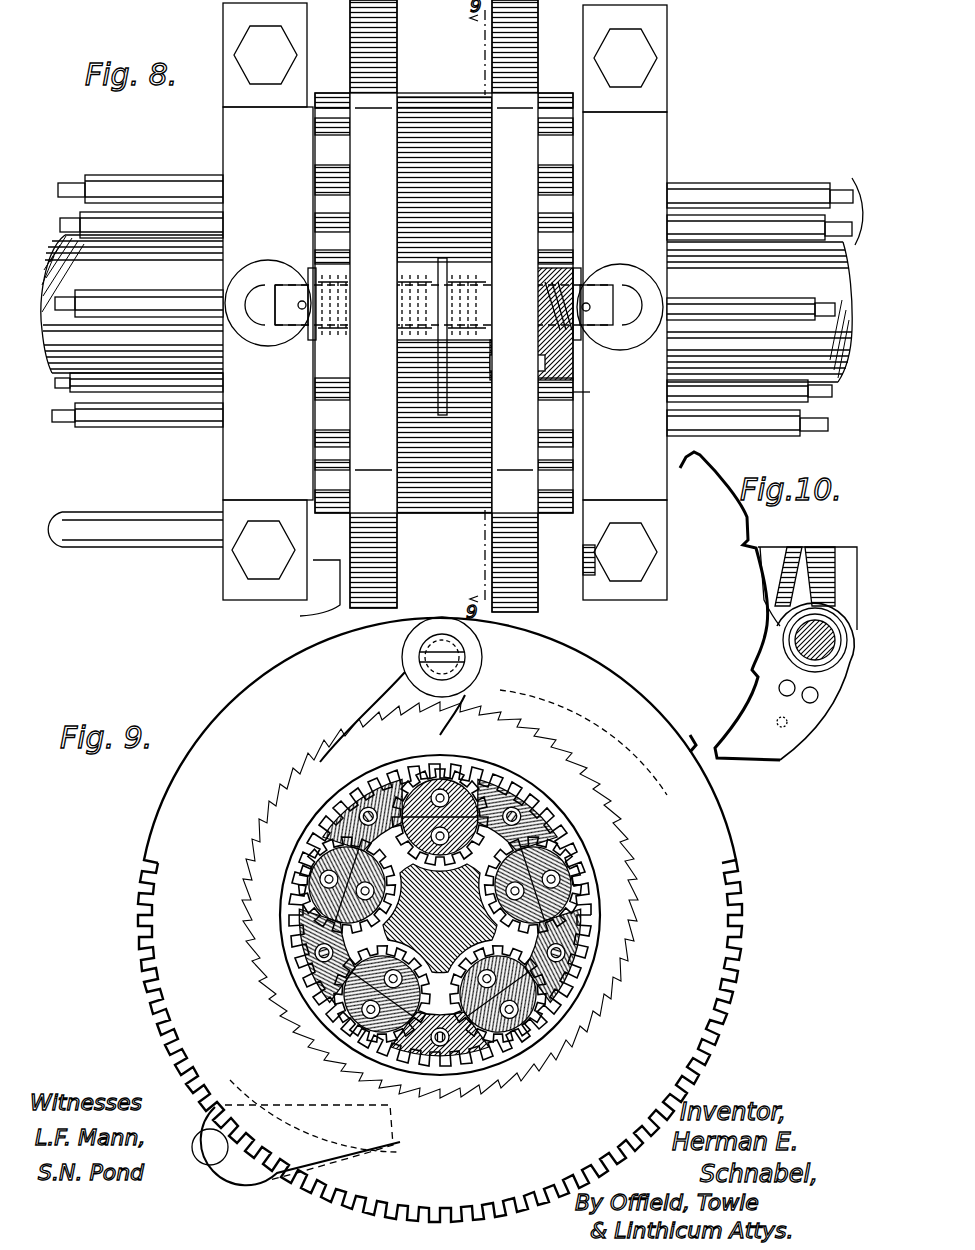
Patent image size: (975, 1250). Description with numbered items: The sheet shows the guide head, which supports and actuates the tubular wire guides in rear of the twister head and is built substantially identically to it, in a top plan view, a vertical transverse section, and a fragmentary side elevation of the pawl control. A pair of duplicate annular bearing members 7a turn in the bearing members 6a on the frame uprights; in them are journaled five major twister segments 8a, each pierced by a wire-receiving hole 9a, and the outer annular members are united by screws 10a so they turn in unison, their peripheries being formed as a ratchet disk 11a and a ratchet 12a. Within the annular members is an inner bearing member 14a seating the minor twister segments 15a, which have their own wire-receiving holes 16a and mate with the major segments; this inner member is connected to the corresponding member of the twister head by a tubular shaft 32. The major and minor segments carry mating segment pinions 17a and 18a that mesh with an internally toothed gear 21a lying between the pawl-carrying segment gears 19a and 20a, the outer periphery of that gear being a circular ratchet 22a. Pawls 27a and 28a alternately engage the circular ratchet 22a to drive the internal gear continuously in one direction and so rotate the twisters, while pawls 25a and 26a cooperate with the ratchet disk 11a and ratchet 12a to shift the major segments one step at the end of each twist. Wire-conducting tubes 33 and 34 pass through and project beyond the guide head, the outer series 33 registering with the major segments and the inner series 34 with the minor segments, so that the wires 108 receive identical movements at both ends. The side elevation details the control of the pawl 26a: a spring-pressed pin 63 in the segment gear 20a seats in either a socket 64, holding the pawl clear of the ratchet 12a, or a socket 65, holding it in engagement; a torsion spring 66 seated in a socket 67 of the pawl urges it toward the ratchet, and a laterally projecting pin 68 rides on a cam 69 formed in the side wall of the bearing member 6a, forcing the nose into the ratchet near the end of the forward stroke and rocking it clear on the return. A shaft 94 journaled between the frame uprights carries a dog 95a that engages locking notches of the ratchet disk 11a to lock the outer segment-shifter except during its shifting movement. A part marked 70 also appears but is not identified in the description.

In FIG. 8, the bearing member 6a is at (245, 135).
In FIG. 10, the bearing member 6a is at (770, 563).
In FIG. 9, the annular bearing member 7a is at (345, 800).
In FIG. 9, the major twister segment 8a is at (318, 852).
In FIG. 9, the wire-receiving hole 9a is at (560, 1035).
In FIG. 9, the screw 10a is at (245, 932).
In FIG. 8, the ratchet disk 11a is at (322, 436).
In FIG. 8, the ratchet 12a is at (590, 445).
In FIG. 10, the ratchet 12a is at (748, 540).
In FIG. 9, the inner bearing member 14a is at (590, 960).
In FIG. 9, the minor twister segment 15a is at (400, 870).
In FIG. 9, the wire-receiving hole 16a is at (288, 882).
In FIG. 9, the segment pinion 17a is at (372, 805).
In FIG. 9, the segment pinion 18a is at (300, 1058).
In FIG. 8, the pawl-carrying segment gear 19a is at (373, 304).
In FIG. 9, the pawl-carrying segment gear 19a is at (718, 826).
In FIG. 8, the pawl-carrying segment gear 20a is at (515, 306).
In FIG. 9, the internally toothed gear 21a is at (335, 818).
In FIG. 8, the circular ratchet 22a is at (424, 108).
In FIG. 9, the circular ratchet 22a is at (255, 968).
In FIG. 8, the pawl 25a is at (330, 345).
In FIG. 8, the pawl 26a is at (574, 376).
In FIG. 10, the pawl 26a is at (798, 725).
In FIG. 8, the pawl 27a is at (414, 345).
In FIG. 9, the pawl 27a is at (438, 638).
In FIG. 8, the pawl 28a is at (464, 345).
In FIG. 8, the tubular shaft 32 is at (132, 301).
In FIG. 8, the wire-conducting tube 33 is at (692, 228).
In FIG. 8, the wire-conducting tube 34 is at (742, 198).
In FIG. 8, the spring-pressed pin 63 is at (525, 380).
In FIG. 10, the socket 64 is at (778, 686).
In FIG. 10, the socket 65 is at (815, 700).
In FIG. 8, the torsion spring 66 is at (566, 272).
In FIG. 10, the torsion spring 66 is at (783, 628).
In FIG. 8, the socket 67 is at (555, 272).
In FIG. 8, the laterally projecting pin 68 is at (590, 392).
In FIG. 10, the laterally projecting pin 68 is at (788, 735).
In FIG. 8, the cam 69 is at (583, 560).
In FIG. 10, the cam 69 is at (815, 560).
In FIG. 8, the right roller drum 70 is at (759, 312).
In FIG. 8, the shaft 94 is at (130, 525).
In FIG. 9, the shaft 94 is at (205, 1140).
In FIG. 8, the dog 95a is at (327, 560).
In FIG. 9, the dog 95a is at (272, 1178).
In FIG. 8, the wire 108 is at (838, 192).